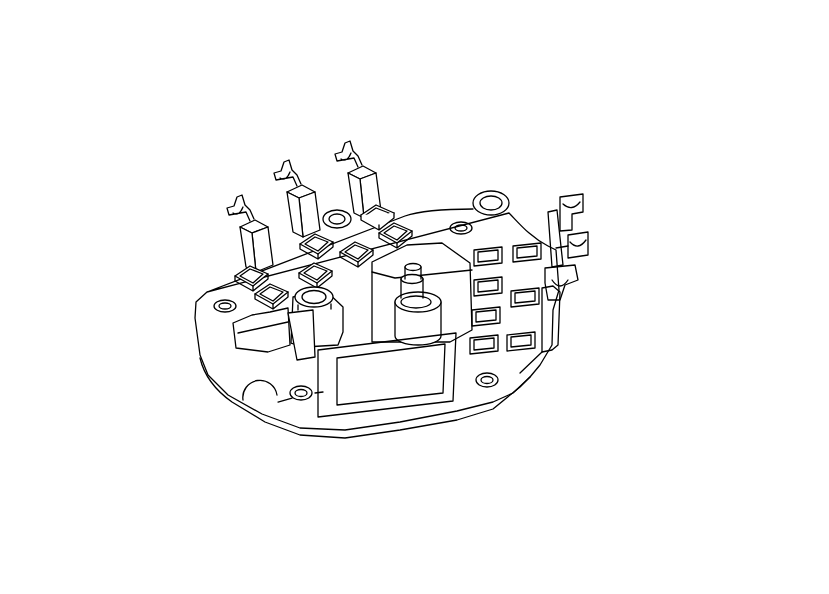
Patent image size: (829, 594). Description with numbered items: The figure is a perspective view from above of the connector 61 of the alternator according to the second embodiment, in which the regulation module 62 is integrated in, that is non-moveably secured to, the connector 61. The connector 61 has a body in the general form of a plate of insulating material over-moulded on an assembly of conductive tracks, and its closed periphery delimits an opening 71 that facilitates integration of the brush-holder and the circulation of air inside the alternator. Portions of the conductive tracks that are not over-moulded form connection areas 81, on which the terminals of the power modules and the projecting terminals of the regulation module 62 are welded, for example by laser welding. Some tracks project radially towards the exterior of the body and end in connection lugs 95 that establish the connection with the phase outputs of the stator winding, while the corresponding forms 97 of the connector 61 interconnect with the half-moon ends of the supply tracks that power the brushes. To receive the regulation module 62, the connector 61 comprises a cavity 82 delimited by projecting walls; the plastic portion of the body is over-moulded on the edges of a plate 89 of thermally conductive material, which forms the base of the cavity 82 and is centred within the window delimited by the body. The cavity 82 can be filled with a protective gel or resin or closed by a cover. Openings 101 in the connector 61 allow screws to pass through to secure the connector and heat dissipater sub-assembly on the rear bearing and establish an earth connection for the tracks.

The connector 61 is at (279, 120).
The regulation module 62 is at (248, 416).
The opening 71 is at (377, 288).
The connection areas 81 is at (257, 292).
The cavity 82 is at (336, 424).
The plate 89 is at (397, 385).
The connection lugs 95 is at (288, 170).
The corresponding forms 97 is at (296, 300).
The openings 101 is at (460, 217).